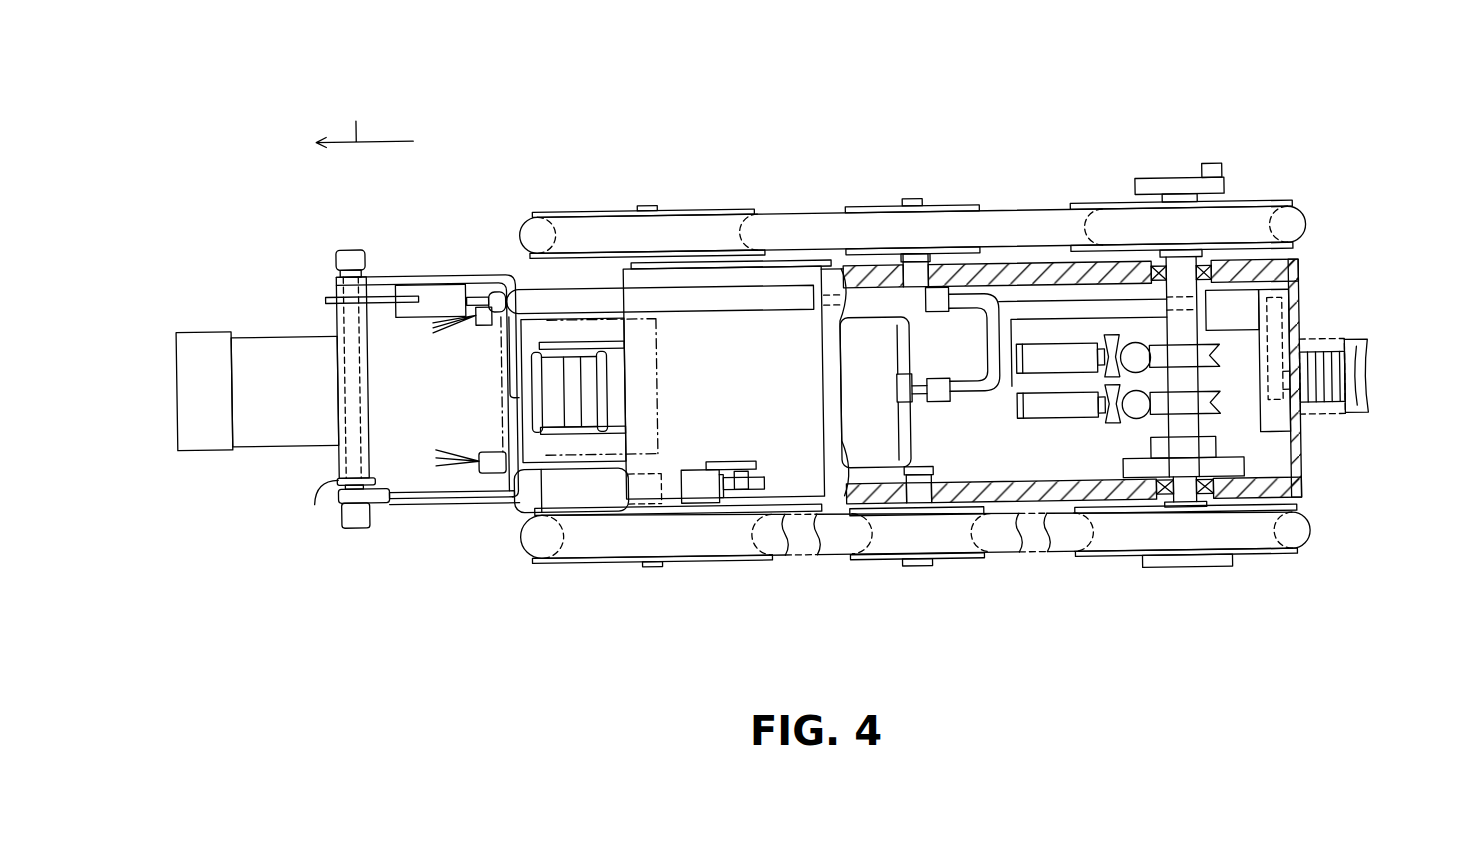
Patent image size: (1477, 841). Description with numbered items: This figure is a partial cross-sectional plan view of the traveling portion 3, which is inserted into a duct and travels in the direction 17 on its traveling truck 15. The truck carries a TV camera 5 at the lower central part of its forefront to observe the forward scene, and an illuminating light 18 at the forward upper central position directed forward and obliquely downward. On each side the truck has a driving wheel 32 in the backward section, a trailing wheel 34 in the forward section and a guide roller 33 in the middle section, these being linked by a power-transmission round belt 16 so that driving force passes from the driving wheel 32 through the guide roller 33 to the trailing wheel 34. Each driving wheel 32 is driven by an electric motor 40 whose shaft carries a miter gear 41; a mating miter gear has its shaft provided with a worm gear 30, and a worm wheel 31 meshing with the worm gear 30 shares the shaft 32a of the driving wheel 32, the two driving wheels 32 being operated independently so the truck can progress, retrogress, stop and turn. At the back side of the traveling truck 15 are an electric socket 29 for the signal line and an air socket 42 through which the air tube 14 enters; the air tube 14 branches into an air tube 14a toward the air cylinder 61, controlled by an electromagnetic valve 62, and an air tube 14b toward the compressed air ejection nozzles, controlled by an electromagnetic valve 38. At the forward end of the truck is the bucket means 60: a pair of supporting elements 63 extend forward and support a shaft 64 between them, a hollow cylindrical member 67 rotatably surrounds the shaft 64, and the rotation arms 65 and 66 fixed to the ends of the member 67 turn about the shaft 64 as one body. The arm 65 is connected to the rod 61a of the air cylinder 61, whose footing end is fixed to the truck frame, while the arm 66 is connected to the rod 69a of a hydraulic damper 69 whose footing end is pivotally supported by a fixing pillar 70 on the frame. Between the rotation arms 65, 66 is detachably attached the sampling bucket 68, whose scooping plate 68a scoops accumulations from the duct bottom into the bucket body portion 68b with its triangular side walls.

The traveling portion 3 is at (831, 611).
The TV camera 5 is at (535, 365).
The air tube 14 is at (1138, 305).
The air tube 14a is at (990, 295).
The air tube 14b is at (975, 392).
The traveling truck 15 is at (1127, 503).
The power-transmission round belt 16 is at (1306, 226).
The traveling direction 17 is at (364, 110).
The illuminating light 18 is at (500, 405).
The electric socket 29 is at (1368, 383).
The worm gear 30 is at (1128, 350).
The worm wheel 31 is at (1212, 405).
The driving wheel 32 is at (1257, 205).
The shaft of driving wheel 32a is at (1200, 425).
The guide roller 33 is at (953, 205).
The trailing wheel 34 is at (723, 208).
The electromagnetic valve 38 is at (937, 402).
The electric motor 40 is at (1028, 408).
The miter gear 41 is at (1105, 380).
The air socket 42 is at (1340, 346).
The bucket means 60 is at (337, 579).
The air cylinder 61 is at (517, 253).
The rod of air cylinder 61a is at (477, 290).
The electromagnetic valve 62 is at (940, 312).
The supporting elements 63 is at (398, 269).
The shaft 64 is at (364, 365).
The rotation arm 65 is at (328, 290).
The rotation arm 66 is at (309, 513).
The hollow cylindrical member 67 is at (444, 457).
The sampling bucket 68 is at (216, 262).
The scooping plate 68a is at (192, 440).
The bucket body portion 68b is at (258, 425).
The hydraulic damper 69 is at (590, 500).
The rod of hydraulic damper 69a is at (455, 493).
The fixing pillar 70 is at (762, 484).